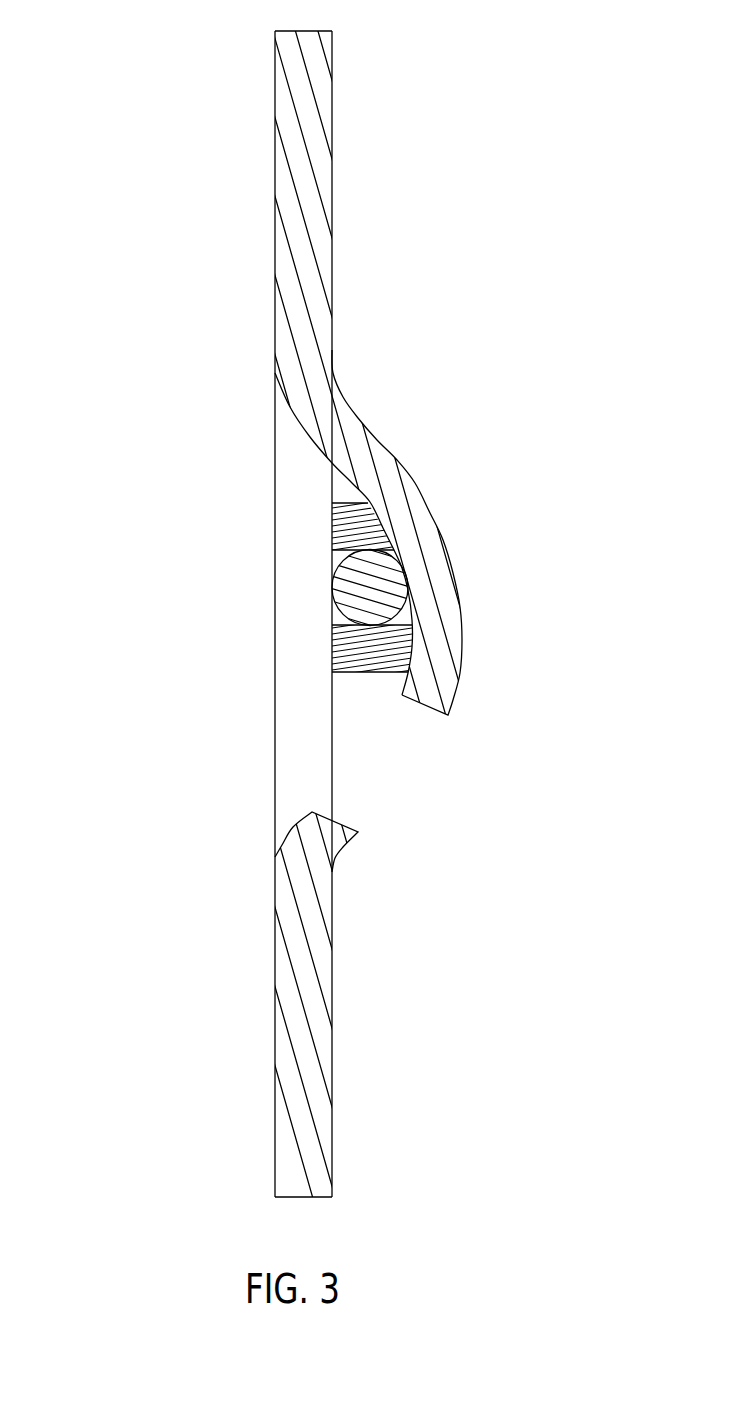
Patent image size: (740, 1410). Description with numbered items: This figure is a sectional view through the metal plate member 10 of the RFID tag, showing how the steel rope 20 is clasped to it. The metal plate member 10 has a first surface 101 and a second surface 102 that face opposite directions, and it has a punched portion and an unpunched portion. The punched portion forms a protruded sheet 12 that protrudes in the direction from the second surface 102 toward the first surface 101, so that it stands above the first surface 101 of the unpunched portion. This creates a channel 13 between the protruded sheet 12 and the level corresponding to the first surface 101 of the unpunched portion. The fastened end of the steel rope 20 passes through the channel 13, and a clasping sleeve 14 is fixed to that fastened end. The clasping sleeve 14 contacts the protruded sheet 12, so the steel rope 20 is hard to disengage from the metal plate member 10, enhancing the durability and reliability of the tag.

The metal plate member 10 is at (370, 705).
The first surface 101 is at (333, 223).
The second surface 102 is at (275, 220).
The protruded sheet 12 is at (422, 540).
The channel 13 is at (367, 695).
The clasping sleeve 14 is at (347, 647).
The steel rope 20 is at (355, 583).